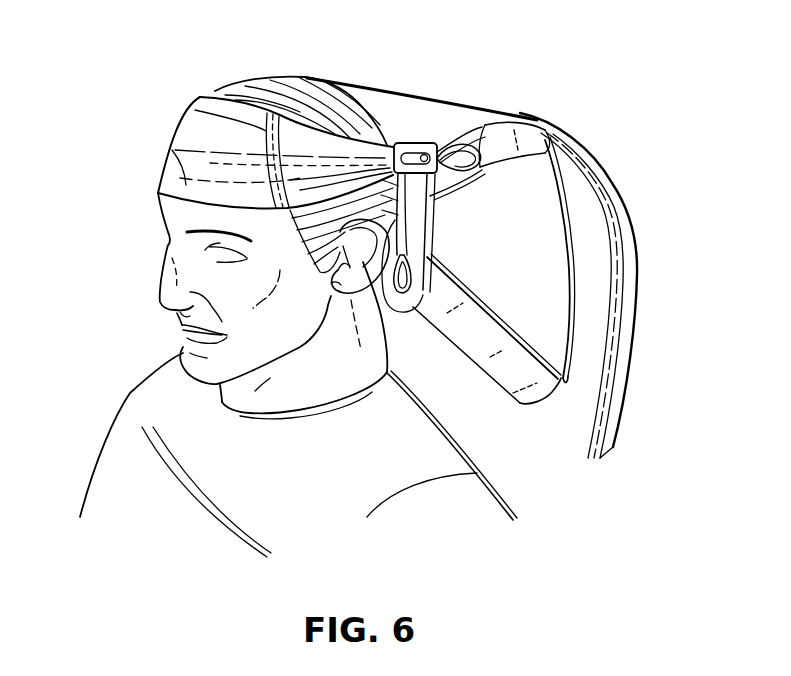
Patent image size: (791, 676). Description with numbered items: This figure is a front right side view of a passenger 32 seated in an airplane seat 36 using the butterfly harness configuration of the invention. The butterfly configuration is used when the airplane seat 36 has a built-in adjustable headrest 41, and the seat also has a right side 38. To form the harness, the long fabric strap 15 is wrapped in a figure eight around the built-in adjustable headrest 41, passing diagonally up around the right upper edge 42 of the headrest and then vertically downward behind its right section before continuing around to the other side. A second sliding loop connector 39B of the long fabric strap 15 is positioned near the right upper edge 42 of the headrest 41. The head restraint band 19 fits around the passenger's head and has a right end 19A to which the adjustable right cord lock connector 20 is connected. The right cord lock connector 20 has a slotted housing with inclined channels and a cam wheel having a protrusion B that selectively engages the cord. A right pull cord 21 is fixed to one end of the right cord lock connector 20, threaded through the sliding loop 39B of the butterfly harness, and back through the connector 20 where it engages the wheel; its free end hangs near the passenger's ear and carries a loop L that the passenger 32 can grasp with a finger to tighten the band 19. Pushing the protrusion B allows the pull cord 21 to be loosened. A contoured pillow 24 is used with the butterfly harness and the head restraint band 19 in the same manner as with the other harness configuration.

The long fabric strap 15 is at (555, 157).
The head restraint band 19 is at (242, 121).
The right end of head restraint band 19A is at (343, 162).
The adjustable right cord lock connector 20 is at (422, 152).
The right pull cord 21 is at (408, 243).
The contoured pillow 24 is at (427, 190).
The passenger 32 is at (123, 403).
The airplane seat 36 is at (533, 113).
The right side 38 is at (613, 447).
The second sliding loop connector 39B is at (477, 140).
The built-in adjustable headrest 41 is at (413, 88).
The right upper edge 42 is at (504, 117).
The protrusion B is at (432, 185).
The loop L is at (417, 277).